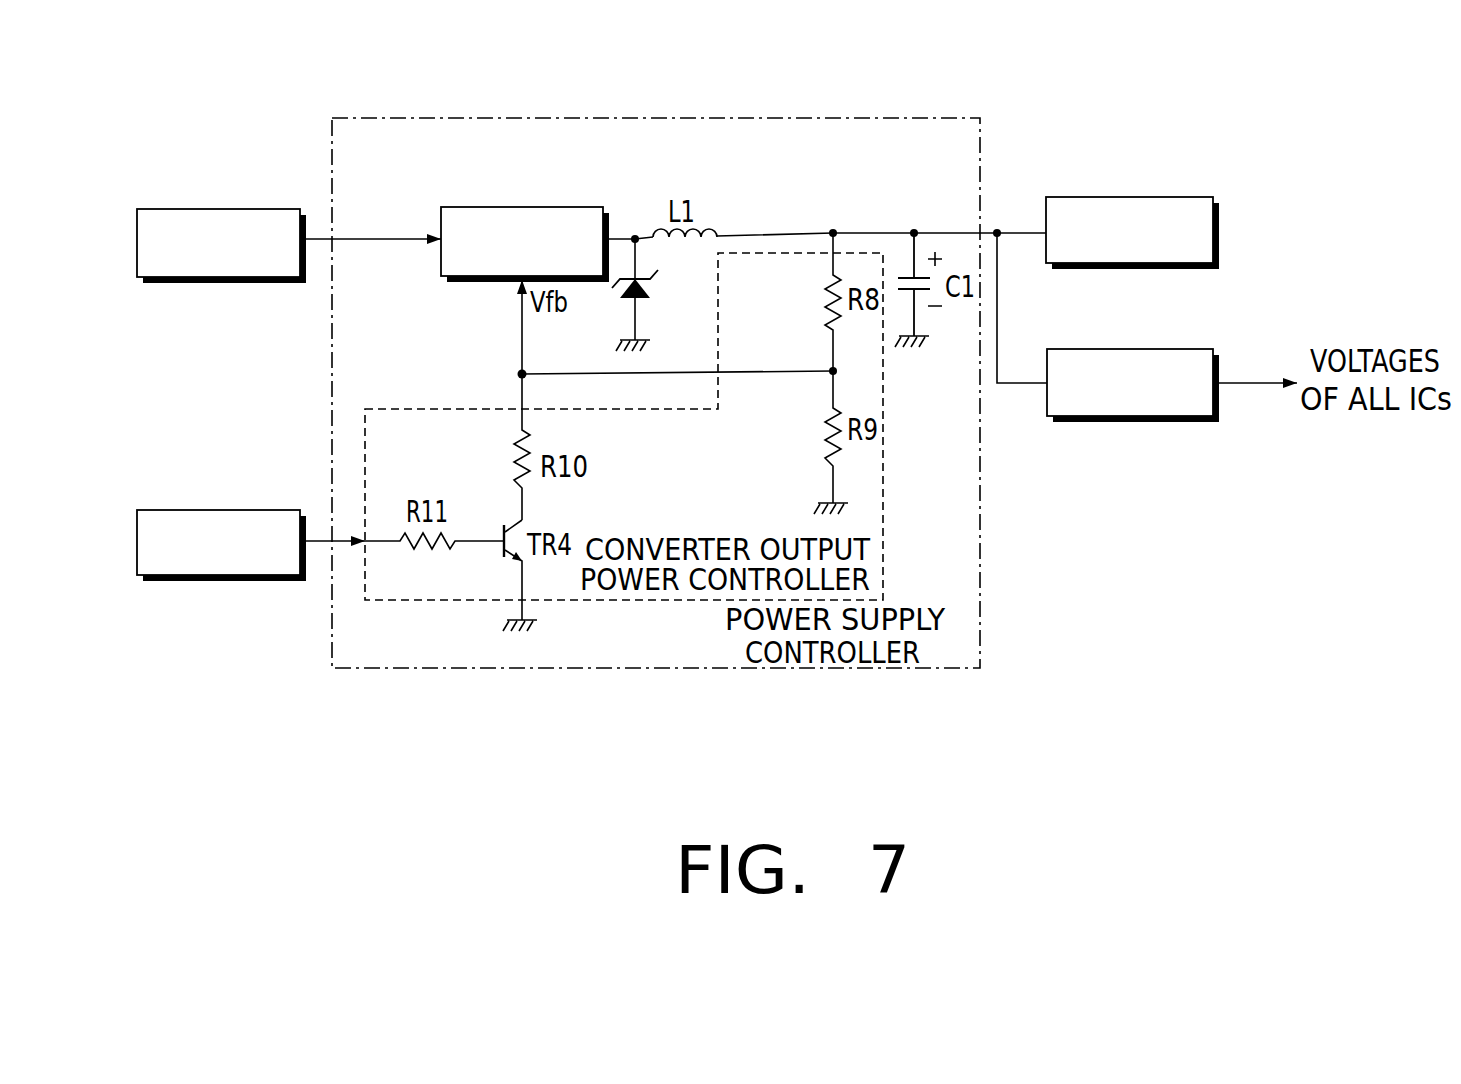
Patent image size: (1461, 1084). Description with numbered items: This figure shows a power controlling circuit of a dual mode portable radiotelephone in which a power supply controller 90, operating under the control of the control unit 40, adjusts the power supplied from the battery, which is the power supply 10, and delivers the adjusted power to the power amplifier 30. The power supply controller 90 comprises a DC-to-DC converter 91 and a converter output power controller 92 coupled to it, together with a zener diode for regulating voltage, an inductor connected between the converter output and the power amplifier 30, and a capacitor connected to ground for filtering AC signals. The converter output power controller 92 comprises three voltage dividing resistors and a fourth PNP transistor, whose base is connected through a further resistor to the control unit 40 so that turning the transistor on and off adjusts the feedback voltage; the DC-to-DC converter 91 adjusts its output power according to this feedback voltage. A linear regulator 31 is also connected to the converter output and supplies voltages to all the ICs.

The power supply 10 is at (218, 208).
The power amplifier 30 is at (1125, 196).
The linear regulator 31 is at (1127, 348).
The control unit 40 is at (218, 510).
The power supply controller 90 is at (878, 117).
The DC-to-DC converter 91 is at (519, 207).
The converter output power controller 92 is at (396, 407).